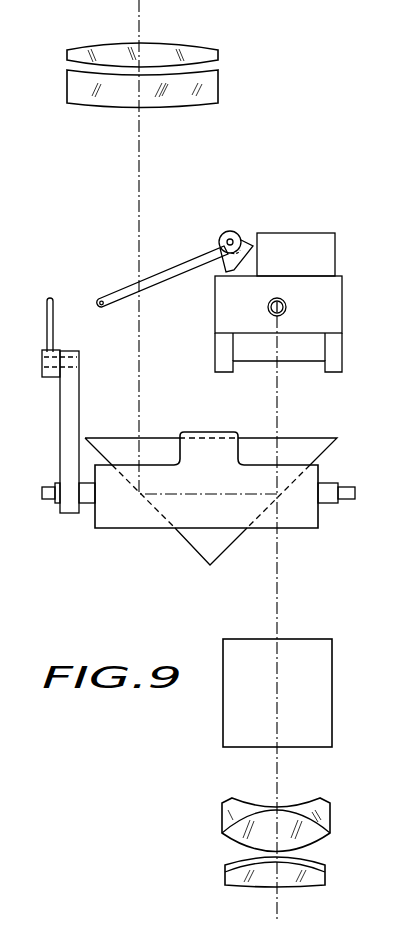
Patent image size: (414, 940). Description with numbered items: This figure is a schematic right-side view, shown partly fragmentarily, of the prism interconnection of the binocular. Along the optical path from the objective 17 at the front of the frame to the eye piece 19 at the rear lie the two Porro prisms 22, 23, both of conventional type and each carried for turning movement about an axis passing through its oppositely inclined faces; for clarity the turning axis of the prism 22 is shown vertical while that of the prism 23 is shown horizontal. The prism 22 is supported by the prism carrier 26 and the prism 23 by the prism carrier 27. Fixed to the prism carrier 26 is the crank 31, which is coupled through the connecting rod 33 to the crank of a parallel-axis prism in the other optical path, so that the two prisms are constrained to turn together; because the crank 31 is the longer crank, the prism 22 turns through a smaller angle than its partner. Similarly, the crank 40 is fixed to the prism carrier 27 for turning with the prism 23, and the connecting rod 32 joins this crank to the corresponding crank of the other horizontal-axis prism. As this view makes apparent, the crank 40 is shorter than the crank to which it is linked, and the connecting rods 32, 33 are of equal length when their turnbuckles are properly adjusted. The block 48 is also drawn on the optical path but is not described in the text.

The objective 17 is at (206, 57).
The eye piece 19 is at (328, 820).
The Porro prism 22 is at (197, 543).
The Porro prism 23 is at (316, 244).
The prism carrier 26 is at (136, 524).
The prism carrier 27 is at (323, 322).
The crank 31 is at (60, 440).
The connecting rod 32 is at (182, 256).
The connecting rod 33 is at (47, 323).
The crank 40 is at (242, 244).
The block 48 is at (320, 692).